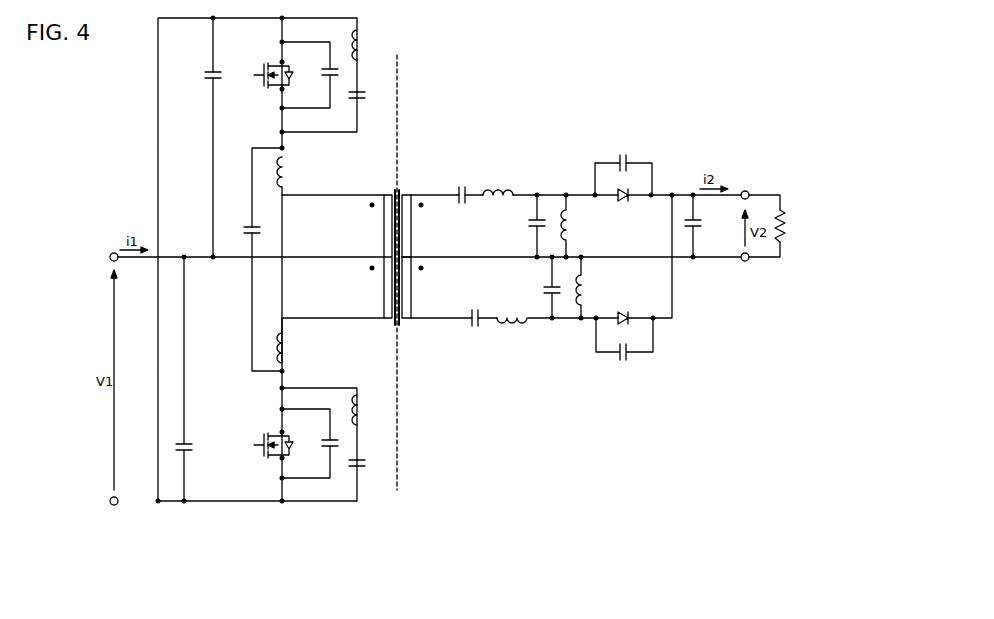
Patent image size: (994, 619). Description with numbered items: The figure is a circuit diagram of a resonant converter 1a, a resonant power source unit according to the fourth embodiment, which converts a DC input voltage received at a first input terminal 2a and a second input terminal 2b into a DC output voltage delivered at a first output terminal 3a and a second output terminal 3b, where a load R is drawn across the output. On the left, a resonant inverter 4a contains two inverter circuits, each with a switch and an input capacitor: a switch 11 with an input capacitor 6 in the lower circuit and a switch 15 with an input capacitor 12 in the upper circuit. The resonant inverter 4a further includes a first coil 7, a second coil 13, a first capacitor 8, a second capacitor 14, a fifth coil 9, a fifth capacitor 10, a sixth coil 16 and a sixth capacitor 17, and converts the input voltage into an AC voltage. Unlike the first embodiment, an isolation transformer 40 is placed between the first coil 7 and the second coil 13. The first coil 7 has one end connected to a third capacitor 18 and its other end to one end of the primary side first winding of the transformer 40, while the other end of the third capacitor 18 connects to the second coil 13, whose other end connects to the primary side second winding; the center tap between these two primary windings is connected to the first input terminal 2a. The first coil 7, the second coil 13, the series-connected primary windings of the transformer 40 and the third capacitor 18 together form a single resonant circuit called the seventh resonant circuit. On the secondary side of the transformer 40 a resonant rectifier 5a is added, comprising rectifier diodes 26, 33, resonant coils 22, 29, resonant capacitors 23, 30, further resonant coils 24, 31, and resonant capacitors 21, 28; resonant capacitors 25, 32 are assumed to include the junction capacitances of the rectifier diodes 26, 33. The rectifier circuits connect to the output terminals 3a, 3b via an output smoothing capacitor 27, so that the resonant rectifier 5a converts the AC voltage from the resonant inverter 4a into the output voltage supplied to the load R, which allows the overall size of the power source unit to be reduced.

The resonant converter 1a is at (99, 81).
The first input terminal 2a is at (112, 252).
The second input terminal 2b is at (113, 506).
The first output terminal 3a is at (747, 189).
The second output terminal 3b is at (746, 262).
The resonant inverter 4a is at (291, 514).
The resonant rectifier 5a is at (541, 452).
The input capacitor 6 is at (194, 447).
The first coil 7 is at (292, 347).
The first capacitor 8 is at (323, 440).
The fifth coil 9 is at (367, 411).
The fifth capacitor 10 is at (366, 464).
The switch 11 is at (262, 438).
The input capacitor 12 is at (204, 76).
The second coil 13 is at (292, 171).
The second capacitor 14 is at (324, 68).
The switch 15 is at (262, 68).
The sixth coil 16 is at (368, 46).
The sixth capacitor 17 is at (366, 96).
The third capacitor 18 is at (261, 231).
The resonant capacitor 21 is at (462, 186).
The resonant coil 22 is at (498, 187).
The resonant capacitor 23 is at (541, 227).
The resonant coil 24 is at (575, 228).
The resonant capacitor 25 is at (623, 154).
The rectifier diode 26 is at (623, 204).
The output smoothing capacitor 27 is at (702, 224).
The resonant capacitor 28 is at (475, 328).
The resonant coil 29 is at (512, 328).
The resonant capacitor 30 is at (555, 294).
The resonant coil 31 is at (589, 292).
The resonant capacitor 32 is at (623, 362).
The rectifier diode 33 is at (626, 312).
The isolation transformer 40 is at (404, 192).
The load resistor R is at (788, 232).